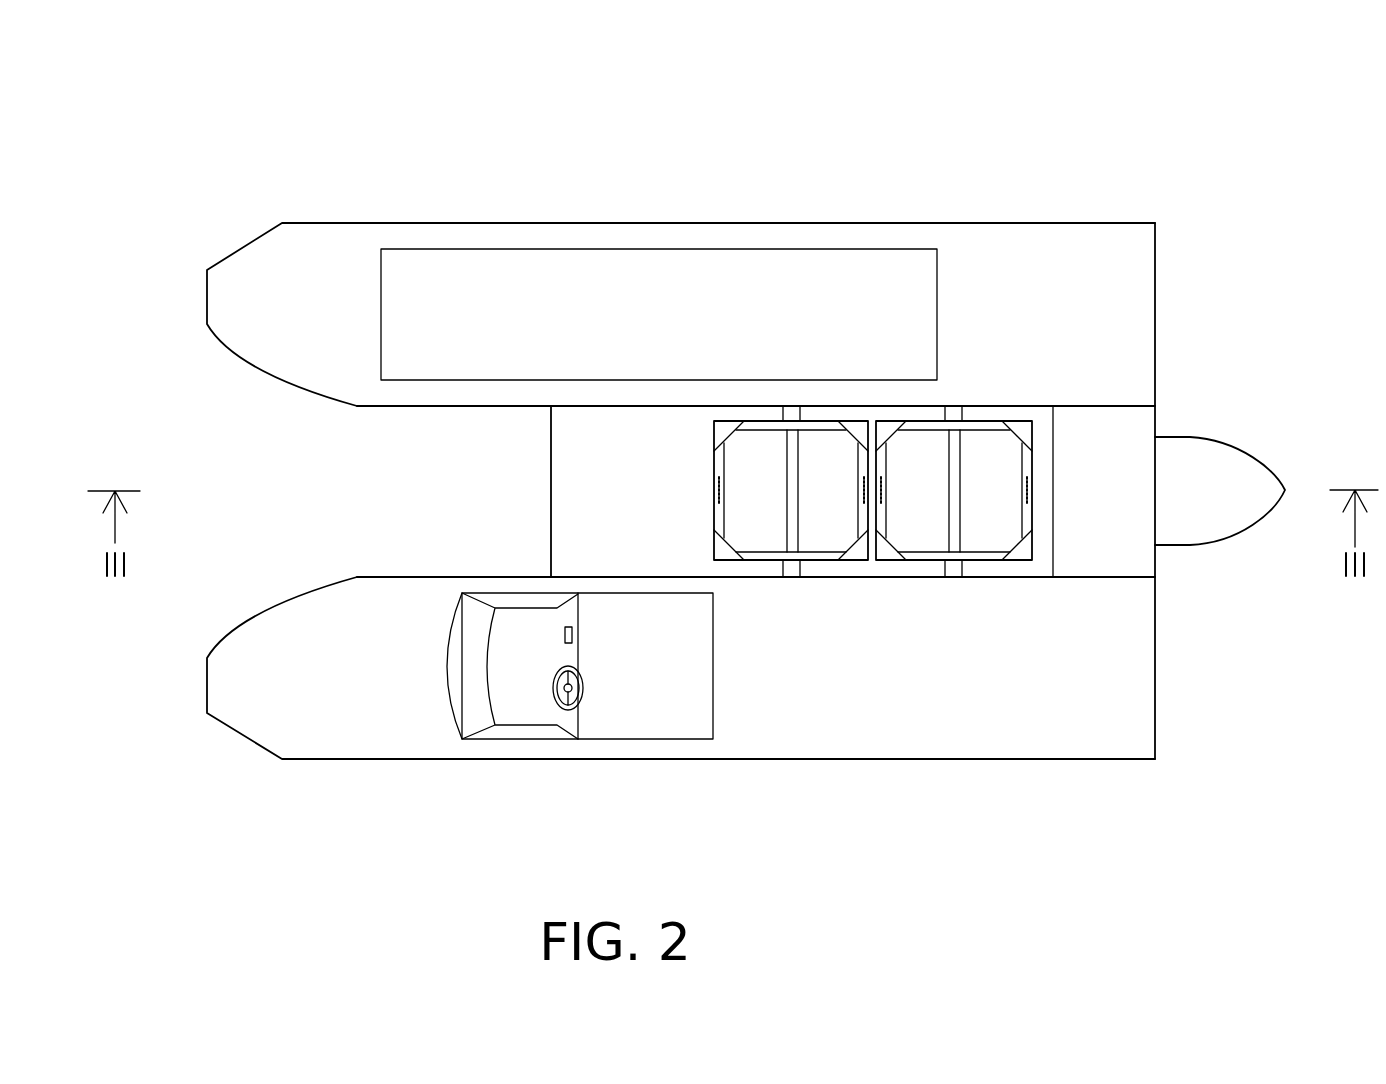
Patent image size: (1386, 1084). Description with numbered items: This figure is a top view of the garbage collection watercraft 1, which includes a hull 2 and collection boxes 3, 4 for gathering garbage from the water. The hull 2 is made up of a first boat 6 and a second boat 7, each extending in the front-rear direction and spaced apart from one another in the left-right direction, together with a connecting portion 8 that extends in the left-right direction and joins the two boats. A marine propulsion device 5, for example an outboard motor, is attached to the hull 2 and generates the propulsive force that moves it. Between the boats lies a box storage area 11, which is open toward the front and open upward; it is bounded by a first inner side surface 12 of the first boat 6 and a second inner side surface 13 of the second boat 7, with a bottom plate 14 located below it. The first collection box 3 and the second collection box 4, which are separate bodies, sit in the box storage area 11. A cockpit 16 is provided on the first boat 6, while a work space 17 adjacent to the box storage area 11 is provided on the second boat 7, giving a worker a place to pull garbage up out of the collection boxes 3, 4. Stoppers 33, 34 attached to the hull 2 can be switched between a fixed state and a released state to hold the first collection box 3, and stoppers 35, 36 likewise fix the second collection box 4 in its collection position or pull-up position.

The garbage collection watercraft 1 is at (195, 145).
The hull 2 is at (430, 183).
The first collection box 3 is at (763, 562).
The second collection box 4 is at (987, 557).
The marine propulsion device 5 is at (1217, 457).
The first boat 6 is at (890, 760).
The second boat 7 is at (857, 223).
The connecting portion 8 is at (1123, 503).
The box storage area 11 is at (590, 498).
The first inner side surface 12 is at (650, 577).
The second inner side surface 13 is at (650, 408).
The bottom plate 14 is at (577, 452).
The cockpit 16 is at (612, 702).
The work space 17 is at (616, 275).
The stopper 33 is at (792, 577).
The stopper 34 is at (793, 407).
The stopper 35 is at (955, 577).
The stopper 36 is at (953, 407).